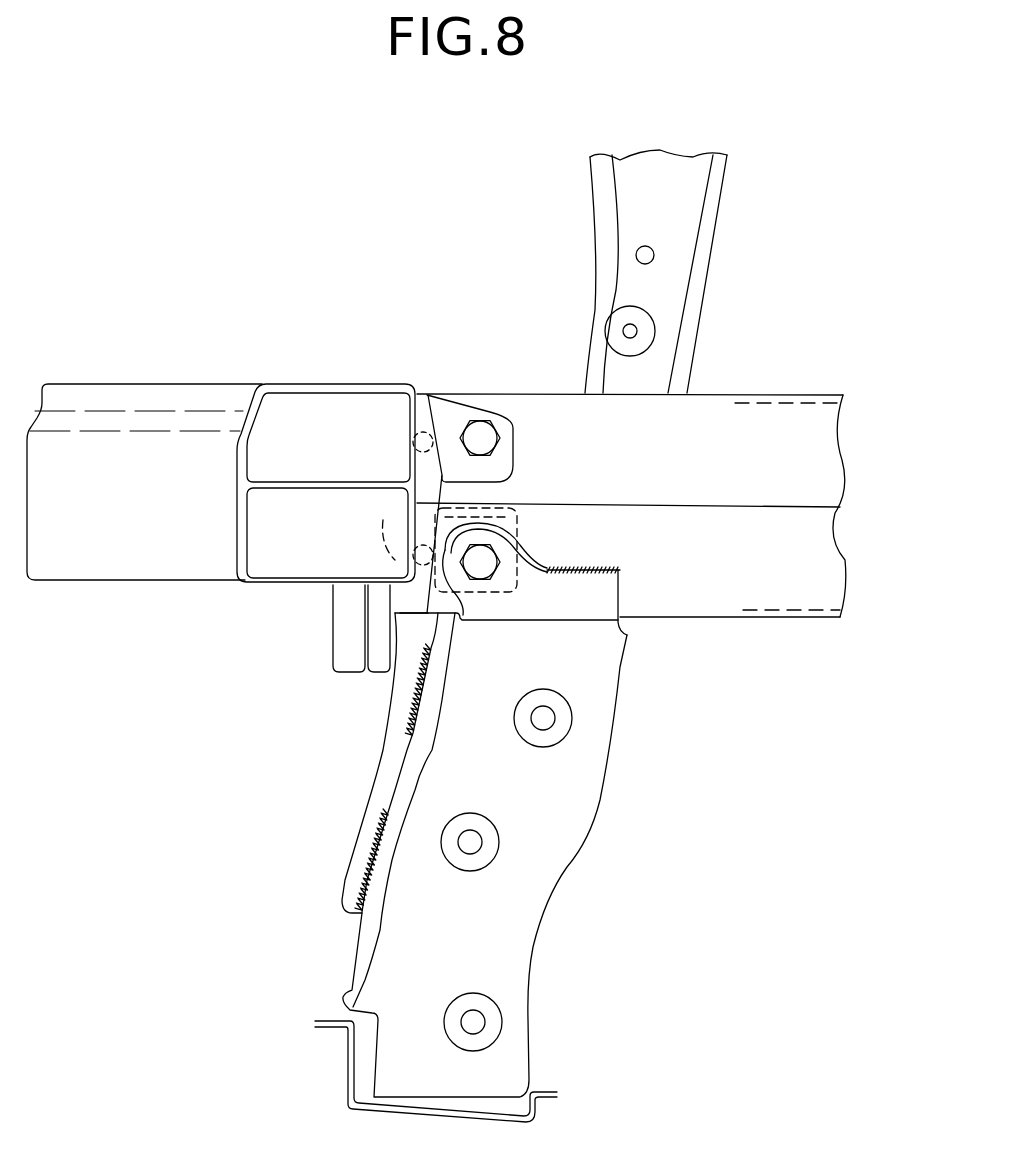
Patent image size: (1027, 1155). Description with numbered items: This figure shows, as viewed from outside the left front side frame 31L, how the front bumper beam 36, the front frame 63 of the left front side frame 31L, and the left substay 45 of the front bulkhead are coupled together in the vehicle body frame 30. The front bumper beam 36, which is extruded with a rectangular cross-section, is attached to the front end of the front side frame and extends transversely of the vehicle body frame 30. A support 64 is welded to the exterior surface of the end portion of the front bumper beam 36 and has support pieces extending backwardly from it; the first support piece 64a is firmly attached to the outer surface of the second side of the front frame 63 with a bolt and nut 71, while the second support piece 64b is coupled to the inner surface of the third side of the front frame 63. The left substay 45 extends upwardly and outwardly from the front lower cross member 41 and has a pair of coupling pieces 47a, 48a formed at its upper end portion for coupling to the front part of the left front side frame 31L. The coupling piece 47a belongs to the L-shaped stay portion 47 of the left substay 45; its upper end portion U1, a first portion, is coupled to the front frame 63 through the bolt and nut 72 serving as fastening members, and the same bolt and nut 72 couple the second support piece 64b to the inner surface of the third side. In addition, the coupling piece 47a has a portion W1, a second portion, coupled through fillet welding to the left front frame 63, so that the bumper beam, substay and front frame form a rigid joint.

The vehicle body frame 30 is at (284, 138).
The left front side frame 31L is at (714, 388).
The front bumper beam 36 is at (297, 383).
The front lower cross member 41 is at (343, 1060).
The left substay 45 is at (530, 943).
The stay portion 47 is at (560, 848).
The coupling piece 47a is at (610, 593).
The coupling piece 48a is at (387, 540).
The front frame 63 is at (778, 420).
The support 64 is at (526, 390).
The first support piece 64a is at (457, 413).
The second support piece 64b is at (520, 540).
The bolt and nut 71 is at (480, 426).
The bolt and nut 72 is at (481, 568).
The upper end portion U1 is at (517, 557).
The portion W1 is at (585, 568).